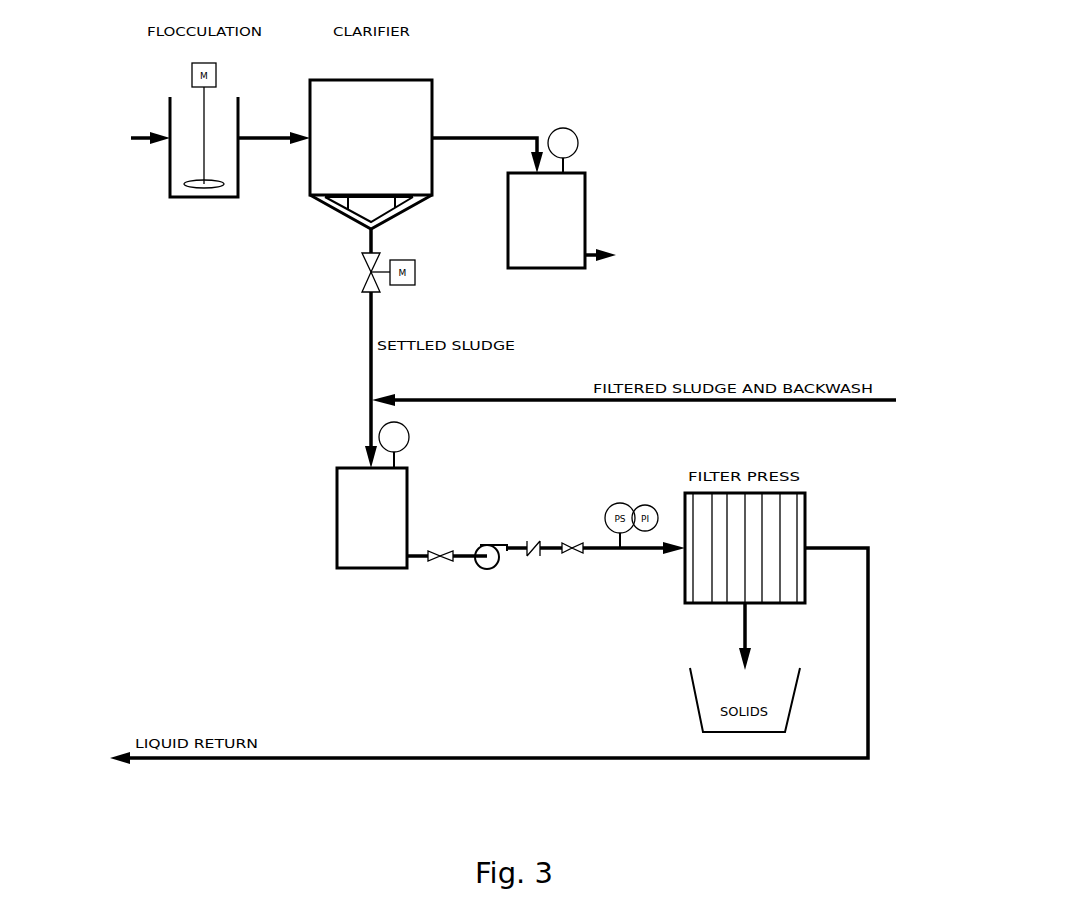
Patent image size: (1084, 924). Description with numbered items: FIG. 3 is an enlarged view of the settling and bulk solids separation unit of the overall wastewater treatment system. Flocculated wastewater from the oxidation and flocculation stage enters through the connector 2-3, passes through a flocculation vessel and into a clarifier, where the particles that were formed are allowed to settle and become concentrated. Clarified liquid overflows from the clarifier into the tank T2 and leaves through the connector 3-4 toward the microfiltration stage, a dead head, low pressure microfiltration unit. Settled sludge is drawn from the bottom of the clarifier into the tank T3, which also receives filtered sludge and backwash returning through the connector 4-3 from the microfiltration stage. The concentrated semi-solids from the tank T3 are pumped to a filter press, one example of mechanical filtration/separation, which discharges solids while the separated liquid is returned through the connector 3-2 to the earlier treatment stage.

The process connector from FIG. 2 (feed to flocculation) 2-3 is at (119, 138).
The process connector to FIG. 4 (clarified water from tank T2) 3-4 is at (631, 255).
The process connector from FIG. 4 (filtered sludge and backwash) 4-3 is at (665, 400).
The process connector to FIG. 2 (liquid return) 3-2 is at (457, 668).
The clarified water tank T2 is at (546, 198).
The sludge tank T3 is at (373, 495).